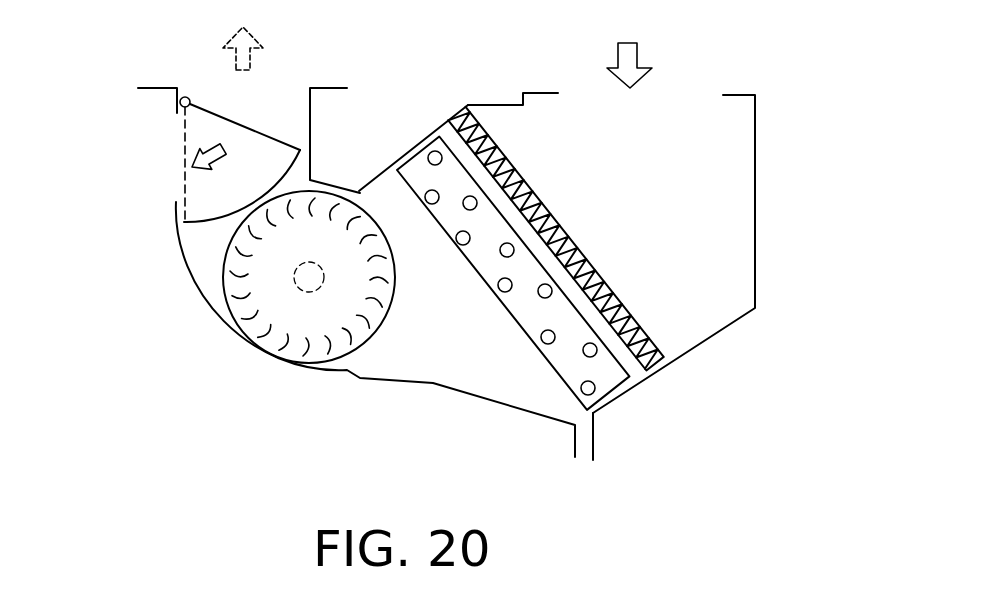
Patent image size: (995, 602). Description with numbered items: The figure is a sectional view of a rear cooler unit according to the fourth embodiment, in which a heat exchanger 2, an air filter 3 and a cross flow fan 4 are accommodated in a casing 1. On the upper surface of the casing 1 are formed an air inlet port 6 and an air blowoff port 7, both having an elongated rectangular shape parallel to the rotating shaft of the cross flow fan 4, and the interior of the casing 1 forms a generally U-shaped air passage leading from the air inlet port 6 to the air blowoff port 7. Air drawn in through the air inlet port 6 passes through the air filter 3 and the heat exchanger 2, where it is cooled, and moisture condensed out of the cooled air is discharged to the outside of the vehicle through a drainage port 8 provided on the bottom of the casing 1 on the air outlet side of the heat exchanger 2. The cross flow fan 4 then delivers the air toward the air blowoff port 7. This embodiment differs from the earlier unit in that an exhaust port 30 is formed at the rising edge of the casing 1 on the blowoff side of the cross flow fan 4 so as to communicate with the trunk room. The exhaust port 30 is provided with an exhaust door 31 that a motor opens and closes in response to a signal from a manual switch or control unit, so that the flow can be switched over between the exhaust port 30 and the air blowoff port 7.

The casing 1 is at (755, 192).
The heat exchanger 2 is at (550, 363).
The air filter 3 is at (652, 342).
The cross flow fan 4 is at (230, 335).
The air inlet port 6 is at (682, 95).
The air blowoff port 7 is at (282, 88).
The drainage port 8 is at (600, 442).
The exhaust port 30 is at (173, 163).
The exhaust door 31 is at (218, 107).